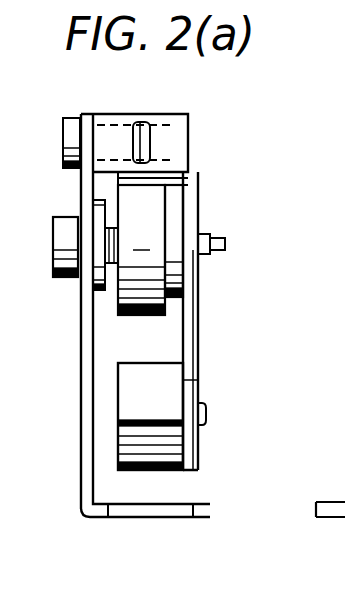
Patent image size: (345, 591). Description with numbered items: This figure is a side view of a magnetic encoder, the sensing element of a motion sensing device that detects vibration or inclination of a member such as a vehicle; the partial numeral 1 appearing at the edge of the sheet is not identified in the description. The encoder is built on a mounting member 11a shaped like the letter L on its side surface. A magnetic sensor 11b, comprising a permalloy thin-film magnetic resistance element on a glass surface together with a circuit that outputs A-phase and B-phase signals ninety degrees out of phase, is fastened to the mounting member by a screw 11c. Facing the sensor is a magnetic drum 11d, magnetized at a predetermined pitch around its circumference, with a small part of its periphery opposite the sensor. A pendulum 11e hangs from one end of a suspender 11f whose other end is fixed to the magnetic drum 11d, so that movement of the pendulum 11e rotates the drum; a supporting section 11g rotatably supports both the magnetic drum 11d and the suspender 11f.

The drive unit 1 is at (330, 304).
The mounting member 11a is at (182, 518).
The magnetic sensor 11b is at (187, 175).
The screw 11c is at (153, 140).
The magnetic drum 11d is at (167, 186).
The pendulum 11e is at (183, 455).
The suspender 11f is at (198, 322).
The supporting section 11g is at (225, 246).